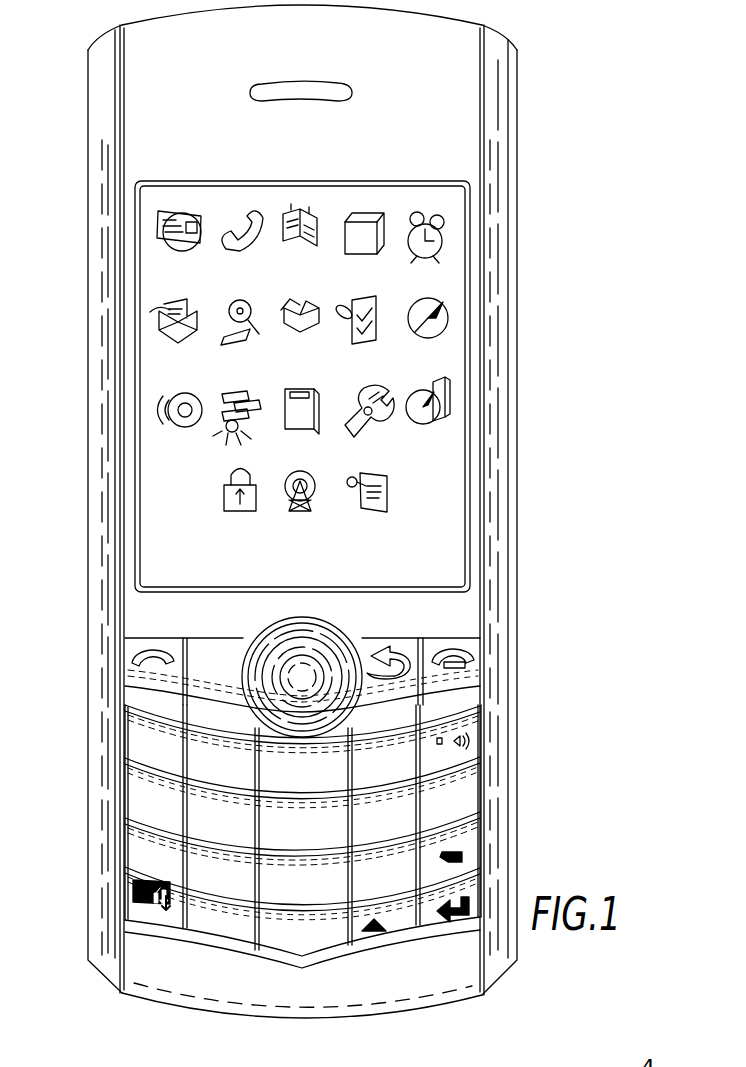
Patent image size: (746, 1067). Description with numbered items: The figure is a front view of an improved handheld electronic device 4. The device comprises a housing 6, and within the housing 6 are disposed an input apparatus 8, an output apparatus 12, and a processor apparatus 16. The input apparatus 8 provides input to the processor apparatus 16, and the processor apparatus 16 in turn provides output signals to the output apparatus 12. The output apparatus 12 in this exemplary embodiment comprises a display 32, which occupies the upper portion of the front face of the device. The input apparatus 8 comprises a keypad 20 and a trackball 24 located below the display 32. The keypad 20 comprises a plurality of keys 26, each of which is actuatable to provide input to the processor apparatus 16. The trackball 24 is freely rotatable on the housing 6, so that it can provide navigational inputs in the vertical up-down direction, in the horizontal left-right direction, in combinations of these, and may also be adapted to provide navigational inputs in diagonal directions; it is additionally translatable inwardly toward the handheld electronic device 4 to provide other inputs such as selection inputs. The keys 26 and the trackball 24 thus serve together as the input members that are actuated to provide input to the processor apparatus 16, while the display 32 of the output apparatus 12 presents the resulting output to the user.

The handheld electronic device 4 is at (545, 65).
The housing 6 is at (517, 137).
The input apparatus 8 is at (278, 656).
The output apparatus 12 is at (449, 280).
The processor apparatus 16 is at (143, 969).
The keypad 20 is at (483, 784).
The trackball 24 is at (318, 652).
The keys 26 is at (125, 720).
The display 32 is at (430, 195).